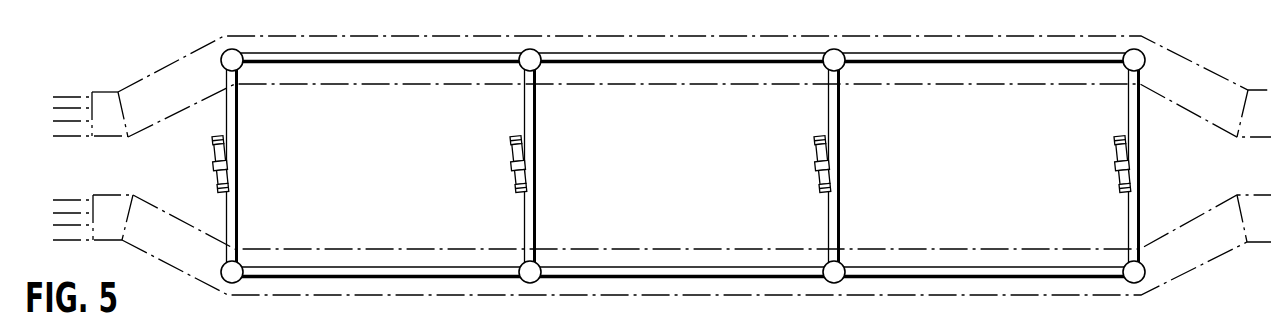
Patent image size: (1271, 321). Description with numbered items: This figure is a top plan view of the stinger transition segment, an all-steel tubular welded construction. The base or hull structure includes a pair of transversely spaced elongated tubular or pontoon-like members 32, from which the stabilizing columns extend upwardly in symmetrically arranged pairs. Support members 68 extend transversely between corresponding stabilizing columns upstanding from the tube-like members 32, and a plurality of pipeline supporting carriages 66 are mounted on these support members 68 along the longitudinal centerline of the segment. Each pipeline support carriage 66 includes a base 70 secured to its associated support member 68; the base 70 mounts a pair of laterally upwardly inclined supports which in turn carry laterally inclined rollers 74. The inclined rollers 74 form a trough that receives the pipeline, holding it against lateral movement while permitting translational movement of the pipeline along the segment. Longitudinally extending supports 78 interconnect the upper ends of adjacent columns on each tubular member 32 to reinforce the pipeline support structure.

The tubular or pontoon-like members 32 is at (728, 35).
The pipeline supporting carriage 66 is at (512, 162).
The support member 68 is at (828, 110).
The base 70 is at (536, 171).
The roller 74 is at (515, 174).
The longitudinally extending support 78 is at (742, 267).